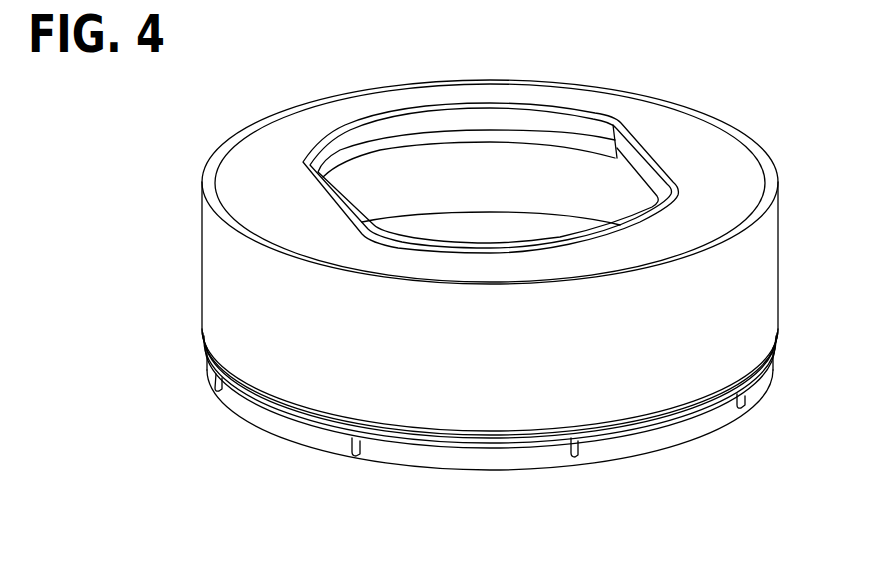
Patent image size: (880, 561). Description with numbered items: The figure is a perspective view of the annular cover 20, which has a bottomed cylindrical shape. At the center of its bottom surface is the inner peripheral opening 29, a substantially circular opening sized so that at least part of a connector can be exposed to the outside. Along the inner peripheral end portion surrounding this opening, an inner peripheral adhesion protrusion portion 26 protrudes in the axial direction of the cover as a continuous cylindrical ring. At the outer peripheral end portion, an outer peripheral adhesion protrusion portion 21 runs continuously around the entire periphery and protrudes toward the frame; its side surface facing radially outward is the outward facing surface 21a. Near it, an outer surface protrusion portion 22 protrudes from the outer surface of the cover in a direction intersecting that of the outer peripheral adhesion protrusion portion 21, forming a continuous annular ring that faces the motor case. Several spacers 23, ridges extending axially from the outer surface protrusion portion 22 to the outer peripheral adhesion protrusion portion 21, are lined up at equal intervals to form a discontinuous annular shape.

The annular cover 20 is at (277, 147).
The outer peripheral adhesion protrusion portion 21 is at (279, 422).
The outward facing surface 21a is at (232, 396).
The outer surface protrusion portion 22 is at (460, 433).
The spacer 23 is at (220, 380).
The inner peripheral adhesion protrusion portion 26 is at (471, 135).
The inner peripheral opening 29 is at (410, 127).